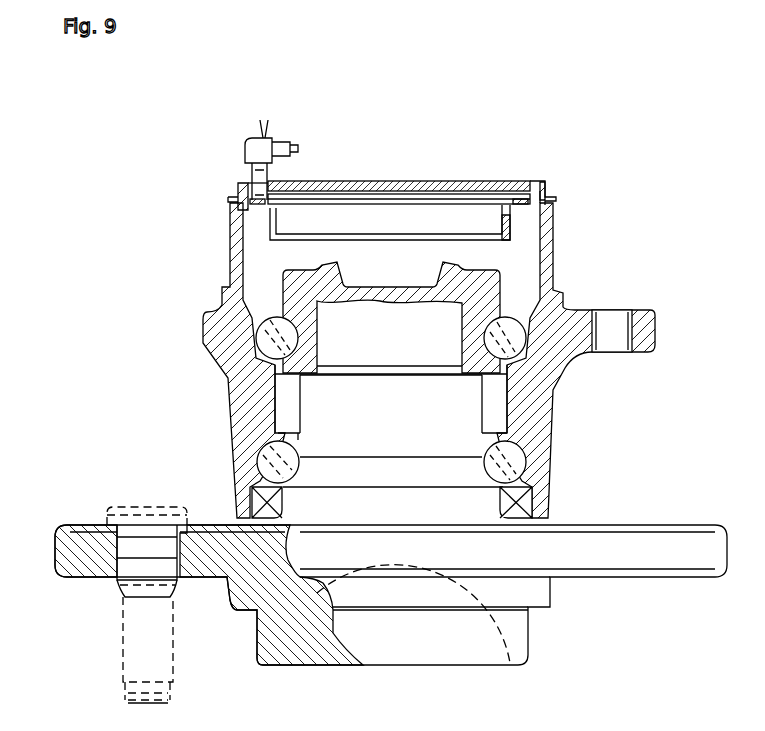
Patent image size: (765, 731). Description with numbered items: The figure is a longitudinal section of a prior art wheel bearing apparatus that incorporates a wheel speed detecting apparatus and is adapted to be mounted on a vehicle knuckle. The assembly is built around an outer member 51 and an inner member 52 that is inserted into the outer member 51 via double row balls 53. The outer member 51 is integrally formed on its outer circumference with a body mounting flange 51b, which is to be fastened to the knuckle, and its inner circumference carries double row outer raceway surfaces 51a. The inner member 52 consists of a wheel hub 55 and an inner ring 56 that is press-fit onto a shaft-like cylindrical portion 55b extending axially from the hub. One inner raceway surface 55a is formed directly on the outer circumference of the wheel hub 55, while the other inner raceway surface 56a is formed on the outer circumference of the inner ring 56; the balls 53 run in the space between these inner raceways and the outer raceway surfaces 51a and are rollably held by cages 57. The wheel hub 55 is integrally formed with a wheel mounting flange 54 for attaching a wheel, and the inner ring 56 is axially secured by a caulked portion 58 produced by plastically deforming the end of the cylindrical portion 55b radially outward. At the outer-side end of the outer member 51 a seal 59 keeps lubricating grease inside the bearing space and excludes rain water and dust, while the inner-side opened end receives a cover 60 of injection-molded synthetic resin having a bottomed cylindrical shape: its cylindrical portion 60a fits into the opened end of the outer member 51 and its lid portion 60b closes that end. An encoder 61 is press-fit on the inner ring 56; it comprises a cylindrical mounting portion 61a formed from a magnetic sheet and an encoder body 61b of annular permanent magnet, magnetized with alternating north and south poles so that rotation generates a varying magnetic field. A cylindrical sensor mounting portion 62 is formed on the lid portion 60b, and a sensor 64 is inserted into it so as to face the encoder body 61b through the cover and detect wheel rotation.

The outer member 51 is at (228, 400).
The outer raceway surfaces 51a is at (262, 333).
The body mounting flange 51b is at (645, 330).
The inner member 52 is at (290, 567).
The double row balls 53 is at (528, 466).
The wheel mounting flange 54 is at (103, 565).
The wheel hub 55 is at (240, 610).
The inner raceway surface 55a is at (280, 454).
The cylindrical portion 55b is at (485, 318).
The inner ring 56 is at (293, 280).
The inner raceway surface 56a is at (485, 356).
The cages 57 is at (484, 434).
The caulked portion 58 is at (467, 268).
The seal 59 is at (520, 506).
The cover 60 is at (692, 172).
The cylindrical portion 60a is at (537, 220).
The lid portion 60b is at (528, 182).
The encoder 61 is at (500, 118).
The cylindrical mounting portion 61a is at (500, 247).
The encoder body 61b is at (525, 200).
The sensor mounting portion 62 is at (248, 176).
The sensor 64 is at (269, 122).